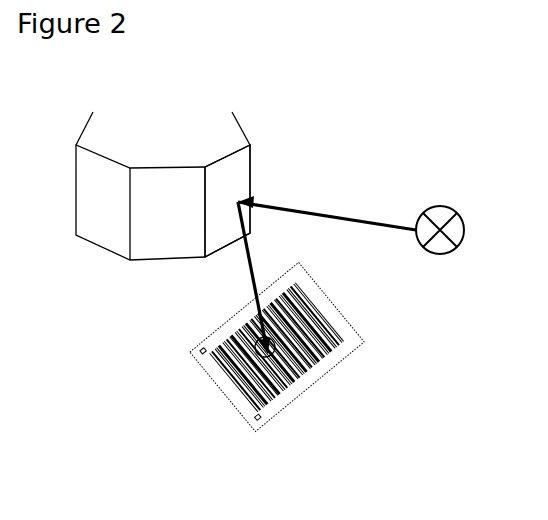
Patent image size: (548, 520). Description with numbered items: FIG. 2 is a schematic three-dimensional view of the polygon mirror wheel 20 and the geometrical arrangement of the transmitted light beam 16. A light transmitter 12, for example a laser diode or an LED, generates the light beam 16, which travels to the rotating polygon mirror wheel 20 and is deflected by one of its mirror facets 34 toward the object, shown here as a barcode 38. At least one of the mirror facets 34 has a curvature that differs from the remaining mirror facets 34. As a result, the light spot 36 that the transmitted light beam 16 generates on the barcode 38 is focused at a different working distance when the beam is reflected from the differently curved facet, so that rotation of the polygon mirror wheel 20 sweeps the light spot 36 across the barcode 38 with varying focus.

The polygon mirror wheel 20 is at (163, 151).
The mirror facets 34 is at (259, 187).
The light transmitter 12 is at (440, 198).
The light beam 16 is at (327, 275).
The light spot 36 is at (197, 384).
The barcode 38 is at (292, 383).